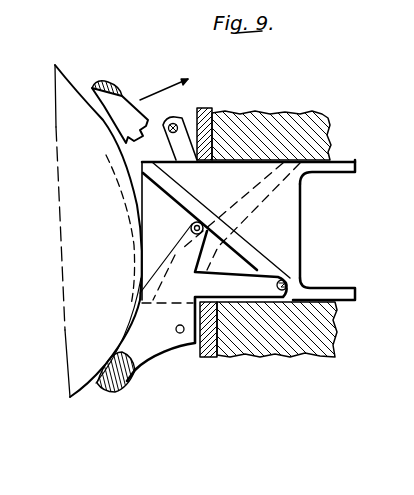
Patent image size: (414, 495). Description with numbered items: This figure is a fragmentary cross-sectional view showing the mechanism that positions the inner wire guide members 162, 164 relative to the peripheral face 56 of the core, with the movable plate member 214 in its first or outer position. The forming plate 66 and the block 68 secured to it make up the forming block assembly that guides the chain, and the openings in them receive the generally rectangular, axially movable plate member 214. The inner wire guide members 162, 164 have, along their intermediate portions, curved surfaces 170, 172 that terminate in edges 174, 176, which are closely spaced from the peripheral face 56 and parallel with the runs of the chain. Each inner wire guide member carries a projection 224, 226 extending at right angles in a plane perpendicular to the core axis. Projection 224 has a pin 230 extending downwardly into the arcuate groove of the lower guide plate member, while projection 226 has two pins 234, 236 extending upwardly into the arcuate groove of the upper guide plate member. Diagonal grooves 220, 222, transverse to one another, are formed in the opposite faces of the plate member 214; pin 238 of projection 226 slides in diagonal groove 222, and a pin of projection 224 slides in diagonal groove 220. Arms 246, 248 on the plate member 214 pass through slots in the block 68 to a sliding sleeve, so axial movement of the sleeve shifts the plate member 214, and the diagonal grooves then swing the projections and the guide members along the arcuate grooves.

The peripheral face 56 is at (77, 410).
The forming plate 66 is at (208, 362).
The block 68 is at (307, 360).
The inner wire guide member 162 is at (222, 78).
The inner wire guide member 164 is at (107, 402).
The curved surface 170 is at (122, 95).
The curved surface 172 is at (120, 388).
The edge 174 is at (93, 86).
The edge 176 is at (96, 398).
The movable plate member 214 is at (303, 216).
The diagonal groove 220 is at (238, 226).
The diagonal groove 222 is at (184, 192).
The projection 224 is at (141, 110).
The projection 226 is at (150, 358).
The pin 230 is at (177, 126).
The pin 234 is at (176, 329).
The pin 236 is at (190, 228).
The pin 238 is at (297, 281).
The arm 246 is at (345, 157).
The arm 248 is at (336, 287).